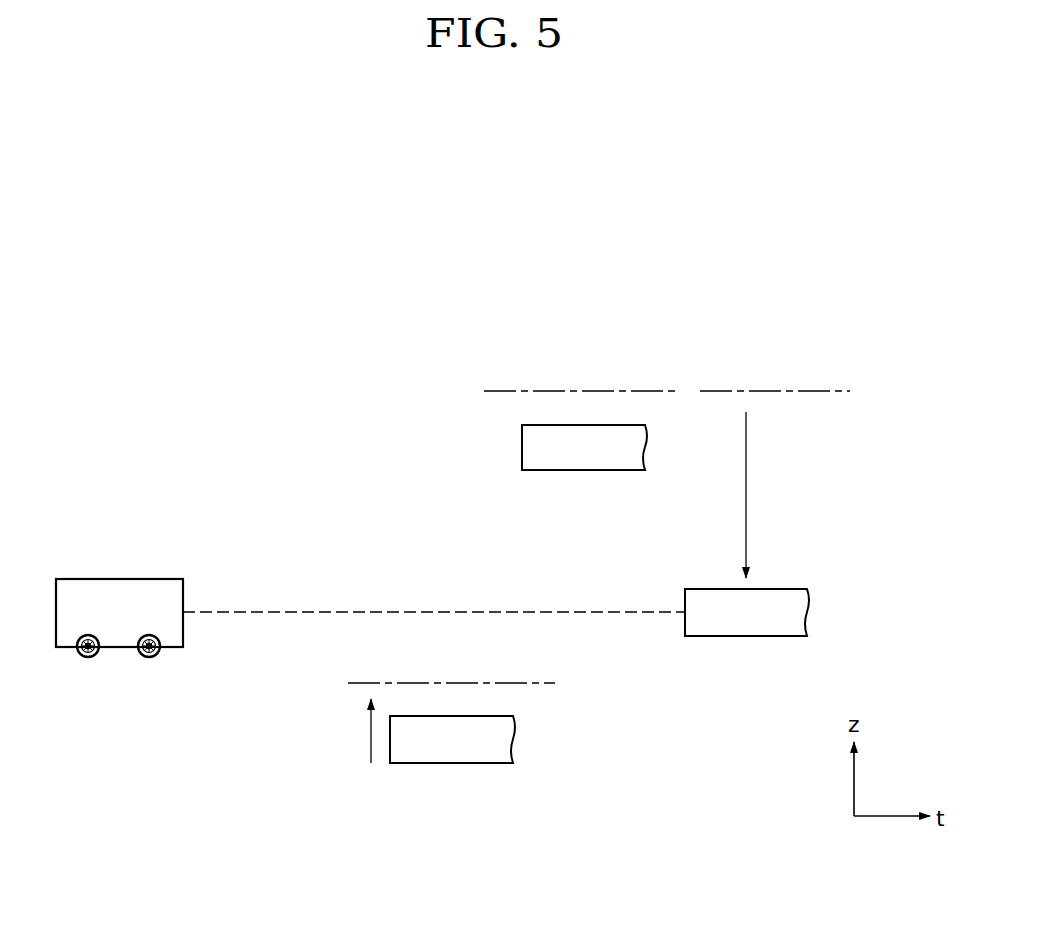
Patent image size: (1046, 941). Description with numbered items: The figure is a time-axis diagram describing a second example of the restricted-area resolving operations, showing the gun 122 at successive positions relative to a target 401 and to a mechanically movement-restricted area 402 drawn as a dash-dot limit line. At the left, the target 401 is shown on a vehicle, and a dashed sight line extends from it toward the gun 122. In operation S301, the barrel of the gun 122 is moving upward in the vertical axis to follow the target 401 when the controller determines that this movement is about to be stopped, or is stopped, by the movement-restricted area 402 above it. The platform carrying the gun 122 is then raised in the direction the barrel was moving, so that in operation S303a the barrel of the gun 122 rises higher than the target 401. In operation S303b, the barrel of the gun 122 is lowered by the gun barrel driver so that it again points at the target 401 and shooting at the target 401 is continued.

The target 401 is at (122, 579).
The mechanically movement-restricted area 402 is at (508, 391).
The gun 122 is at (565, 461).
The operation of determining stop situation S301 is at (347, 745).
The operation of barrel rising above target S303a is at (568, 480).
The operation of lowering barrel and continuing shooting S303b is at (743, 655).